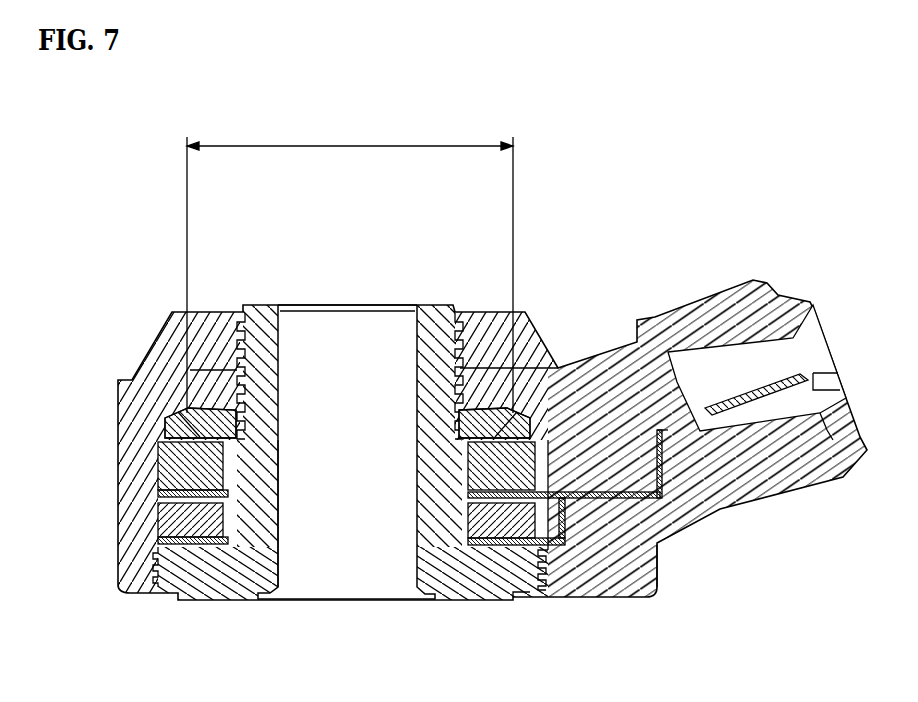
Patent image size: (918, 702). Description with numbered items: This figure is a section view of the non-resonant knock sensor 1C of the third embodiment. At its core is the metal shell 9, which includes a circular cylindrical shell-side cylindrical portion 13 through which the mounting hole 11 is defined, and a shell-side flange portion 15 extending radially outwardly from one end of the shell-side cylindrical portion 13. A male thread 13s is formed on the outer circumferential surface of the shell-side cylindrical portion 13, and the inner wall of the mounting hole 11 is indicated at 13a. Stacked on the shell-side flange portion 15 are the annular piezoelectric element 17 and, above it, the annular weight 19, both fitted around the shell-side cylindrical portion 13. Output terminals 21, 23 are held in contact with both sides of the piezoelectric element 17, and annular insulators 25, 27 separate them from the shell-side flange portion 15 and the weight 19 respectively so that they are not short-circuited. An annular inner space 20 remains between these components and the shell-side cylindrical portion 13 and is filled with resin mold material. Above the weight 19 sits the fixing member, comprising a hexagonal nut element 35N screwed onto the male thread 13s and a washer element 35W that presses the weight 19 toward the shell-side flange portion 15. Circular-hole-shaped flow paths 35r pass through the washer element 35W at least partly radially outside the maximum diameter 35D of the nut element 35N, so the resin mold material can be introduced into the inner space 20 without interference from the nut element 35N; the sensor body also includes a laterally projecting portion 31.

The non-resonant knock sensor 1C is at (415, 240).
The metal shell 9 is at (495, 662).
The mounting hole 11 is at (313, 337).
The shell-side cylindrical portion 13 is at (420, 527).
The inner peripheral surface of sleeve 13a is at (280, 507).
The male thread 13s is at (236, 362).
The shell-side flange portion 15 is at (478, 565).
The piezoelectric element 17 is at (550, 525).
The weight 19 is at (658, 548).
The annular inner space 20 is at (228, 522).
The output terminal 21 is at (538, 530).
The output terminal 23 is at (566, 498).
The annular insulator 25 is at (516, 558).
The annular insulator 27 is at (548, 490).
The arm portion 31 is at (559, 366).
The maximum diameter of the nut element 35D is at (350, 265).
The nut element 35N is at (458, 387).
The washer element 35W is at (475, 433).
The flow paths 35r is at (188, 410).